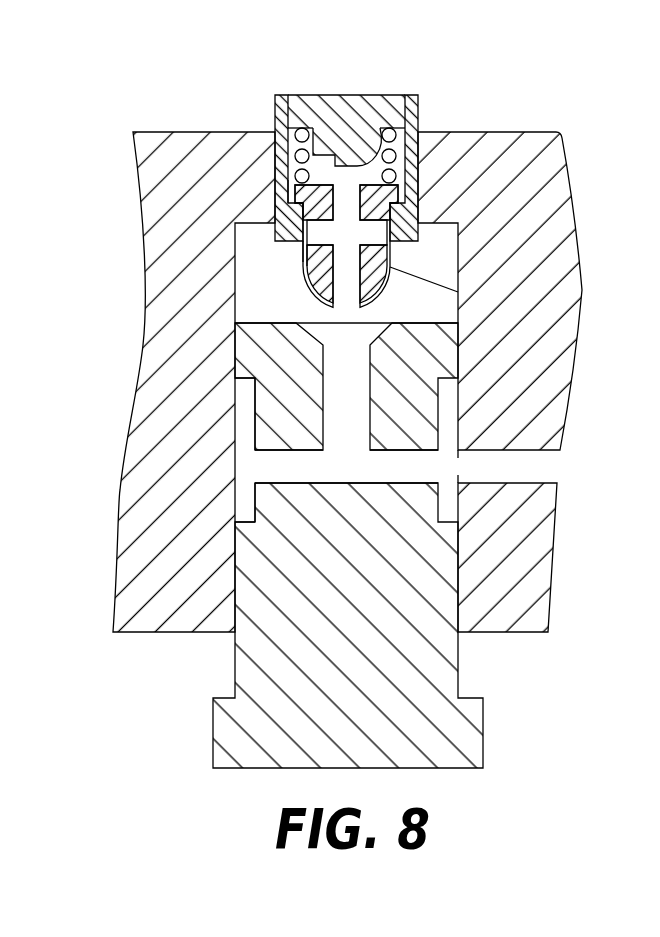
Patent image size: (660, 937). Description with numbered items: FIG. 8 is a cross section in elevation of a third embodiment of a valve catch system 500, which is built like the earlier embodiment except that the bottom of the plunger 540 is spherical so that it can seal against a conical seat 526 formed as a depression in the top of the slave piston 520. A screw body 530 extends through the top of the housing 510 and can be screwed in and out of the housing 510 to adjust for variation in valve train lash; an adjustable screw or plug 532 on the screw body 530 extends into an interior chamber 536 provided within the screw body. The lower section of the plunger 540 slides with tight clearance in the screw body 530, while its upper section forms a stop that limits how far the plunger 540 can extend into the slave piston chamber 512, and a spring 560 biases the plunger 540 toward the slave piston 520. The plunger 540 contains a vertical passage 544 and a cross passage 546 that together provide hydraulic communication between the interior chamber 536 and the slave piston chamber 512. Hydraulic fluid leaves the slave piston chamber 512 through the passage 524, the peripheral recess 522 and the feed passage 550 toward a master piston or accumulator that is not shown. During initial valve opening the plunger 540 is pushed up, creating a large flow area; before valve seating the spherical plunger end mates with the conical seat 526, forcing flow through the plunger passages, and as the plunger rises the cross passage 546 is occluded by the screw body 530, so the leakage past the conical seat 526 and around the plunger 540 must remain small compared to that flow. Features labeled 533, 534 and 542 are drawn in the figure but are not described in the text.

The valve catch system 500 is at (133, 700).
The housing 510 is at (175, 208).
The slave piston chamber 512 is at (430, 302).
The slave piston 520 is at (422, 672).
The peripheral recess 522 is at (244, 426).
The passage 524 is at (362, 478).
The conical seat 526 is at (312, 334).
The screw body 530 is at (398, 184).
The adjustable screw or plug 532 is at (404, 140).
The plunger 533 is at (322, 153).
The valve cup 534 is at (392, 248).
The interior chamber 536 is at (341, 110).
The plunger 540 is at (459, 290).
The cap side wall 542 is at (290, 183).
The vertical passage 544 is at (303, 243).
The cross passage 546 is at (297, 250).
The feed passage 550 is at (524, 464).
The spring 560 is at (418, 150).